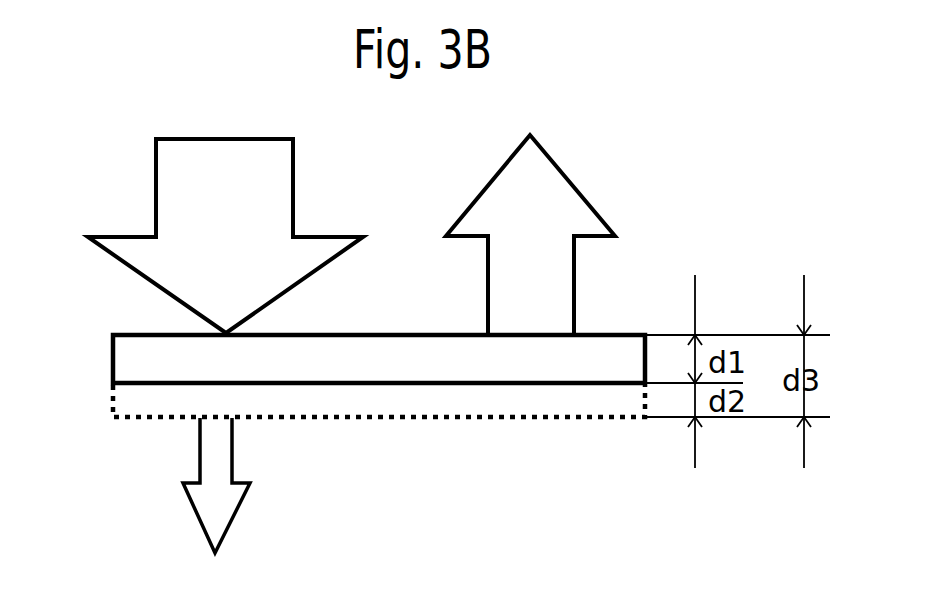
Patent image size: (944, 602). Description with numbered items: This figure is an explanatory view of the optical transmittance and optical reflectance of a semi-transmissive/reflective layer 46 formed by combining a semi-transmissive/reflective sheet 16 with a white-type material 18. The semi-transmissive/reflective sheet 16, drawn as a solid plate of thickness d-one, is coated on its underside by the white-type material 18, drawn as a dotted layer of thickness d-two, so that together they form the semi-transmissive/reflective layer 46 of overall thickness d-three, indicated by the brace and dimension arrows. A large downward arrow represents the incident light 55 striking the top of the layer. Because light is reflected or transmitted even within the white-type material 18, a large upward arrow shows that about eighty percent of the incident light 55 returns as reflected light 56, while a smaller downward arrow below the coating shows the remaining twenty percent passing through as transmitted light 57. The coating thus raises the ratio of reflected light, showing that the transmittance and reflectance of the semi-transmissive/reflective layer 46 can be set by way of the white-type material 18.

The semi-transmissive/reflective sheet 16 is at (470, 368).
The white-type material 18 is at (594, 402).
The semi-transmissive/reflective layer 46 is at (88, 323).
The incident light 55 is at (283, 184).
The reflected light 56 is at (500, 292).
The transmitted light 57 is at (225, 455).